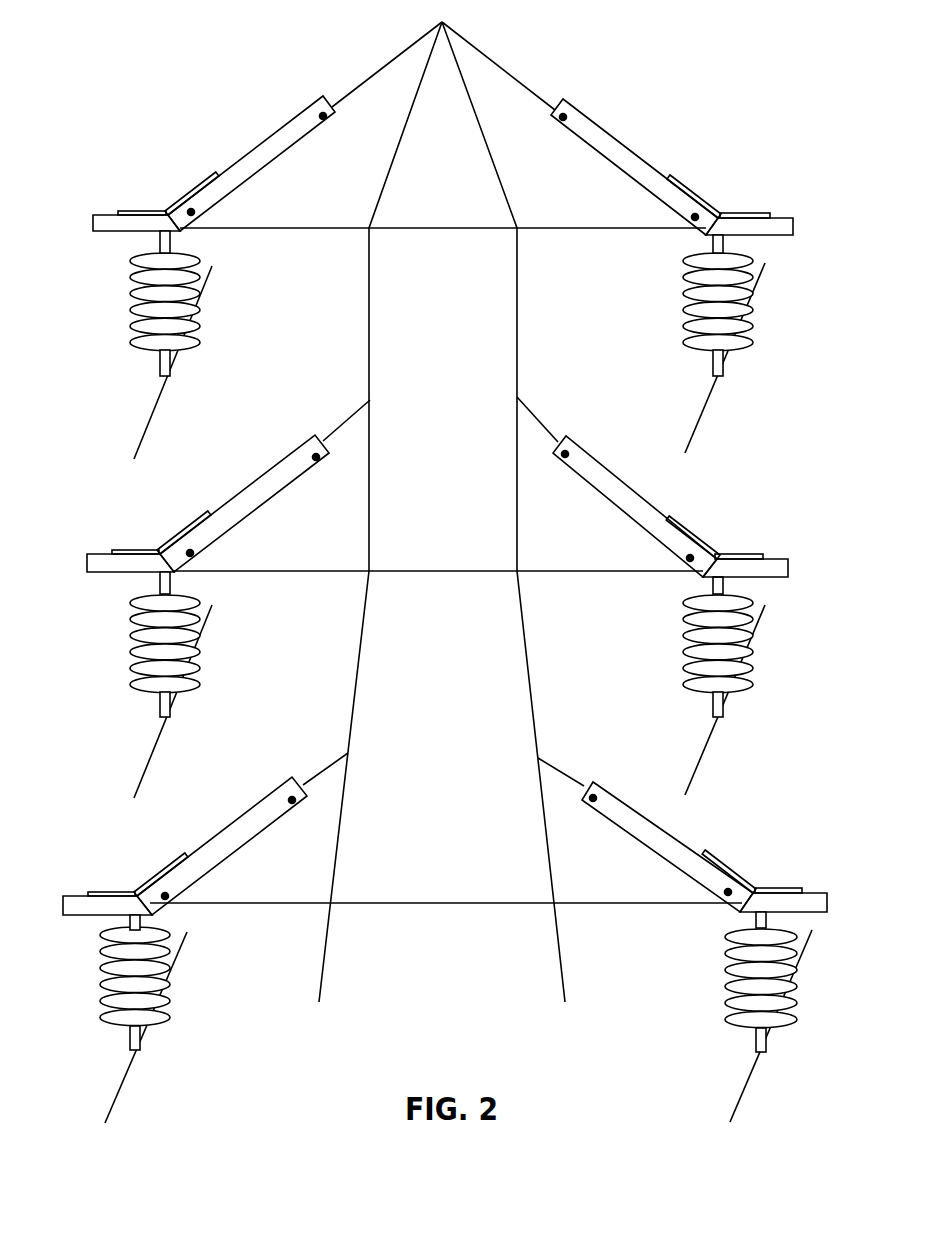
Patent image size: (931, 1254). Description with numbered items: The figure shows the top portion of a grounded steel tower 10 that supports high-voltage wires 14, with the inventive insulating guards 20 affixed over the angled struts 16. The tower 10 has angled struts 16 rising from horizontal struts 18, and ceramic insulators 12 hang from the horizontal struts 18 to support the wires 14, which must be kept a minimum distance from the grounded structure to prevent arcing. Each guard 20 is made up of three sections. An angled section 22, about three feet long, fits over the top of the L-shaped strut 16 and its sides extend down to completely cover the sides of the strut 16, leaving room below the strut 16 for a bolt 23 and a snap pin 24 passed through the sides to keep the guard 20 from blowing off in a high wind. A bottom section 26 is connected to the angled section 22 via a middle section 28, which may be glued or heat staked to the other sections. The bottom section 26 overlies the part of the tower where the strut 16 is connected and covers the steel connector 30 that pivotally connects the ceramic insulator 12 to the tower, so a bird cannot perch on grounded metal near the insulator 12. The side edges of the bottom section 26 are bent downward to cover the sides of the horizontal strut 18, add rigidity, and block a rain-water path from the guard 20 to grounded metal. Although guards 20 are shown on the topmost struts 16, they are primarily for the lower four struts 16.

The tower 10 is at (541, 64).
The ceramic insulator 12 is at (132, 635).
The wire 14 is at (148, 764).
The angled strut 16 is at (353, 413).
The horizontal strut 18 is at (292, 573).
The insulating guard 20 is at (213, 495).
The angled section 22 is at (275, 497).
The bolt 23 is at (316, 461).
The snap pin 24 is at (192, 554).
The bottom section 26 is at (107, 550).
The middle section 28 is at (183, 524).
The steel connector 30 is at (160, 583).